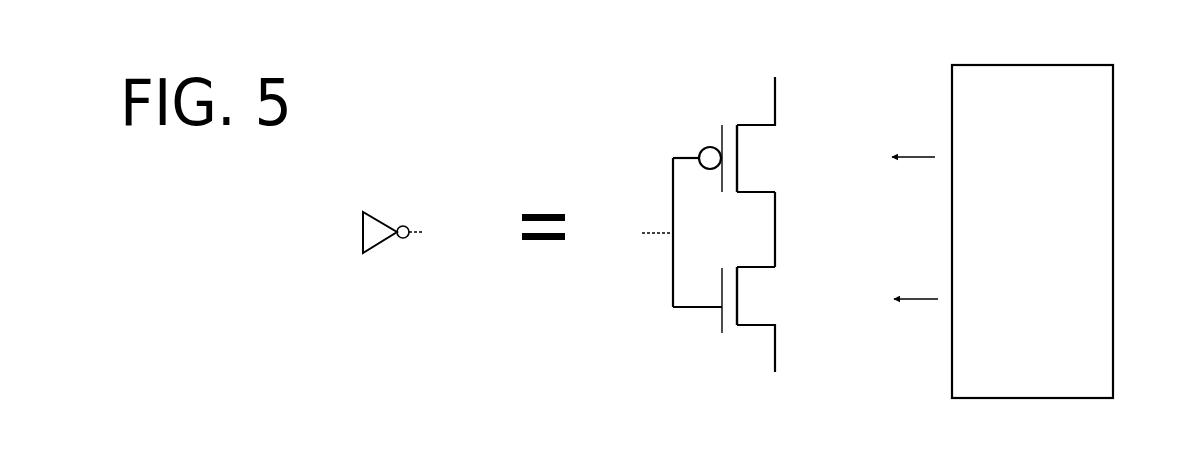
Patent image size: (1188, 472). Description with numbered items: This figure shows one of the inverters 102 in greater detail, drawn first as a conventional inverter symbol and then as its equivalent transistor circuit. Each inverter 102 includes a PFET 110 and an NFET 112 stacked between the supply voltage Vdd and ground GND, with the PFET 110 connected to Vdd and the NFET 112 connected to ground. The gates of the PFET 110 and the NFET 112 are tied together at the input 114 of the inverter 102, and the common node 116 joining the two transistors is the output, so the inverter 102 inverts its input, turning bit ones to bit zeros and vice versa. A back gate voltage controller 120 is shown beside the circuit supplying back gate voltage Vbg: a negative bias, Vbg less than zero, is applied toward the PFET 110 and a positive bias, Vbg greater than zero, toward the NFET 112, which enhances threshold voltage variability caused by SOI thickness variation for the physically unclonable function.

The inverter 102 is at (366, 252).
The PFET 110 is at (737, 155).
The NFET 112 is at (738, 293).
The input 114 is at (650, 233).
The common node 116 is at (768, 233).
The back gate voltage controller 120 is at (1033, 398).